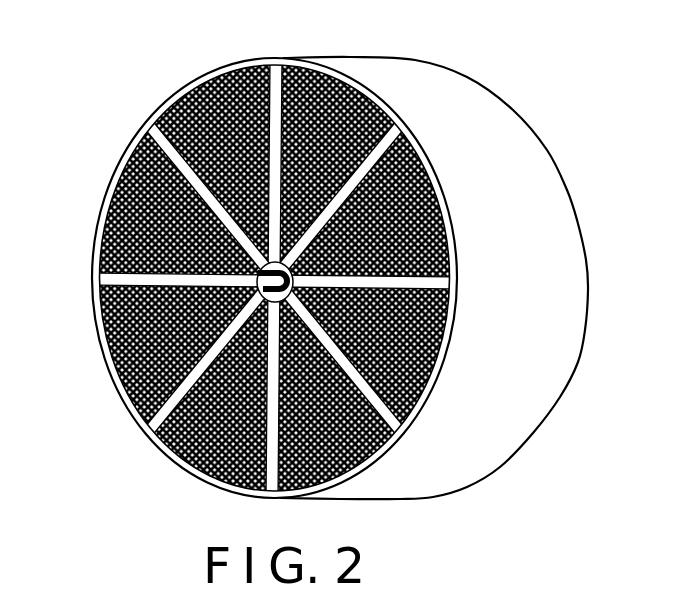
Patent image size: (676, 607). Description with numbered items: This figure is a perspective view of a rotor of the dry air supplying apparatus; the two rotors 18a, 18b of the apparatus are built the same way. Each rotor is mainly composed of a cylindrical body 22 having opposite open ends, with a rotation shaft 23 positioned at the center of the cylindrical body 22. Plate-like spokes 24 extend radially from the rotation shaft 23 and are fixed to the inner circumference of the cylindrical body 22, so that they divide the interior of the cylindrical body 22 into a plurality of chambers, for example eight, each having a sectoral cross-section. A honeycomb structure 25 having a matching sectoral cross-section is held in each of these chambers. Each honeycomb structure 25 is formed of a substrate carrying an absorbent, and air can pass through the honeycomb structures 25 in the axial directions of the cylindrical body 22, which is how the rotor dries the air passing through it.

The rotor 18a is at (343, 264).
The rotor 18b is at (343, 264).
The cylindrical body 22 is at (548, 200).
The rotation shaft 23 is at (100, 245).
The plate-like spokes 24 is at (240, 76).
The honeycomb structures 25 is at (162, 450).